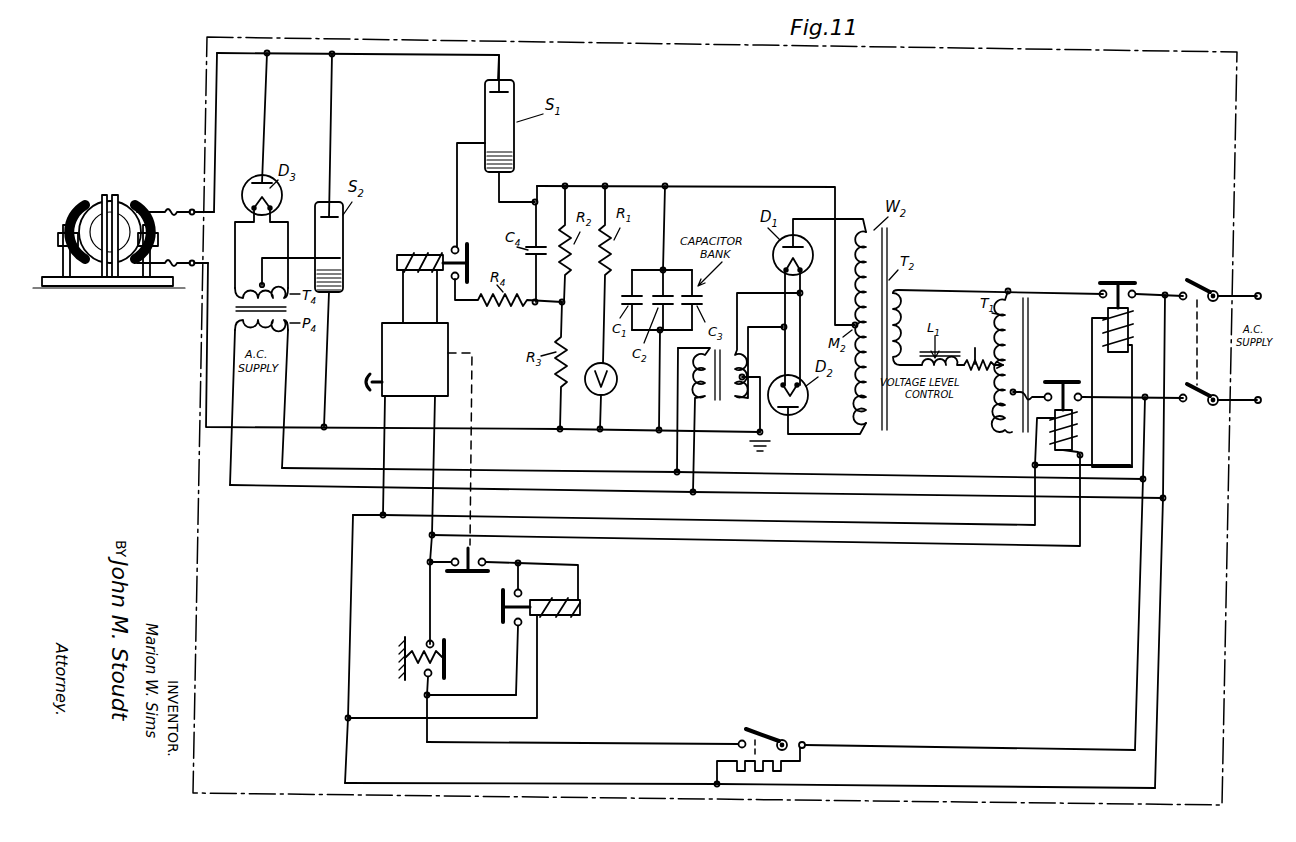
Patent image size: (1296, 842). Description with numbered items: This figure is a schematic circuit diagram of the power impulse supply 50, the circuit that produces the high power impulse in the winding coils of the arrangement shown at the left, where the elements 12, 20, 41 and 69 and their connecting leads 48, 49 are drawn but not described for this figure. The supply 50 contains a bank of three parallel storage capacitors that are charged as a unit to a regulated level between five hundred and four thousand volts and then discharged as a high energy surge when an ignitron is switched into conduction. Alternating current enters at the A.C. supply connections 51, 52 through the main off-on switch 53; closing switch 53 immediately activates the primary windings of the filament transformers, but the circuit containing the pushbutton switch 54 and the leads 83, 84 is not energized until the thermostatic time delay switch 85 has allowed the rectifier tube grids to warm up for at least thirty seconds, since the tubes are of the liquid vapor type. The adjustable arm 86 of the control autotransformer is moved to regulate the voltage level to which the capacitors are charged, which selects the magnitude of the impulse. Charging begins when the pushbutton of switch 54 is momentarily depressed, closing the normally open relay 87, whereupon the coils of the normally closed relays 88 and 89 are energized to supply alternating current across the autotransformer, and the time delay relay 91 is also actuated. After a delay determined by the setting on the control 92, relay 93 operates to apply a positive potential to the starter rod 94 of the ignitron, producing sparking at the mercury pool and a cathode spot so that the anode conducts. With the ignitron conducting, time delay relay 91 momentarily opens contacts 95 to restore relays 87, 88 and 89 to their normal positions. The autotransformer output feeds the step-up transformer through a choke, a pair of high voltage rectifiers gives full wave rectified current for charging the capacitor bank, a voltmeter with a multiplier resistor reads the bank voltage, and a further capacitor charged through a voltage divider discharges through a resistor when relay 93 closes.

The motor armature 12 is at (114, 244).
The armature shaft 20 is at (114, 200).
The motor clamp 41 is at (158, 240).
The lead wire 48 is at (190, 208).
The lead wire 49 is at (192, 268).
The power impulse supply 50 is at (715, 421).
The A.C. supply switch 51 is at (1256, 292).
The A.C. supply switch 52 is at (1256, 405).
The main off-on switch 53 is at (1209, 343).
The pushbutton switch 54 is at (447, 654).
The base 69 is at (83, 290).
The lead 83 is at (680, 742).
The lead 84 is at (668, 782).
The thermostatic time delay switch 85 is at (778, 733).
The adjustable arm 86 is at (975, 348).
The normally open relay 87 is at (558, 618).
The normally closed relay 88 is at (1075, 432).
The normally closed relay 89 is at (1120, 352).
The time delay relay 91 is at (388, 320).
The control 92 is at (366, 390).
The relay 93 is at (457, 247).
The starter rod 94 is at (328, 278).
The contacts 95 is at (468, 574).